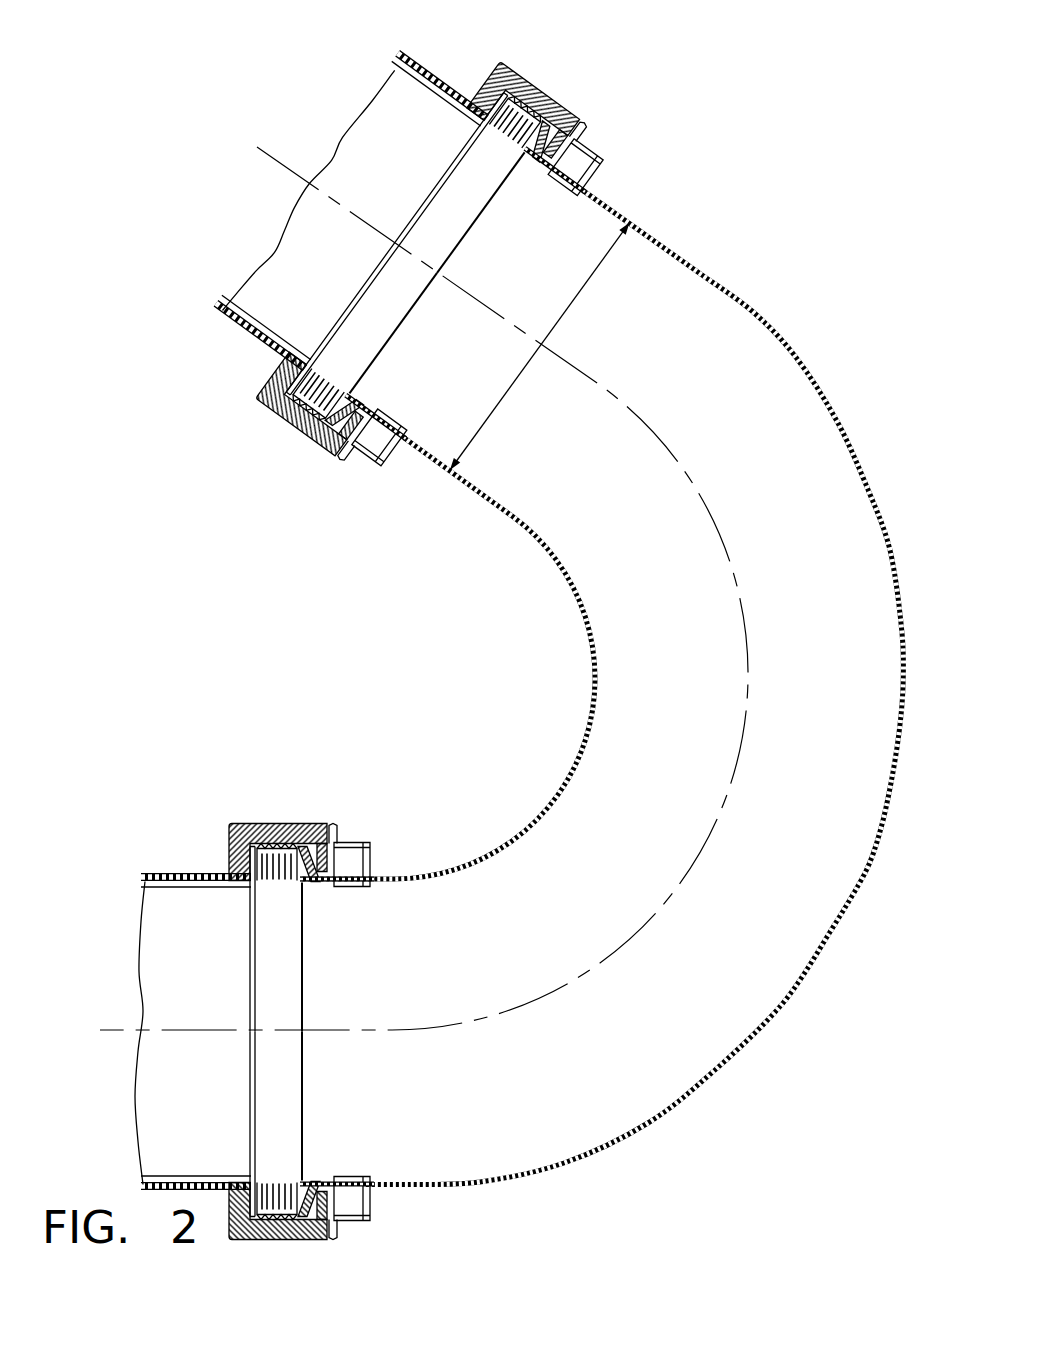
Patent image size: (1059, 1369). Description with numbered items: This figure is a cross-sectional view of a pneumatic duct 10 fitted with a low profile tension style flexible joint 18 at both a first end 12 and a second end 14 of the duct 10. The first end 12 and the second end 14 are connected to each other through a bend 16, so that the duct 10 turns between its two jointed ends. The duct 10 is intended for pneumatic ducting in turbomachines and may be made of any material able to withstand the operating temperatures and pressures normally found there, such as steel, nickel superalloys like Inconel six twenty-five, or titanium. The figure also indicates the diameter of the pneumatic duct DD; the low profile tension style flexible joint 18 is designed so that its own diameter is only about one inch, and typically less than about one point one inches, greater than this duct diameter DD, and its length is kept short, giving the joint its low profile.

The pneumatic duct 10 is at (723, 238).
The first end 12 is at (307, 278).
The second end 14 is at (173, 1112).
The bend 16 is at (803, 472).
The low profile tension style flexible joint 18 is at (547, 93).
The diameter of the pneumatic duct DD is at (503, 397).